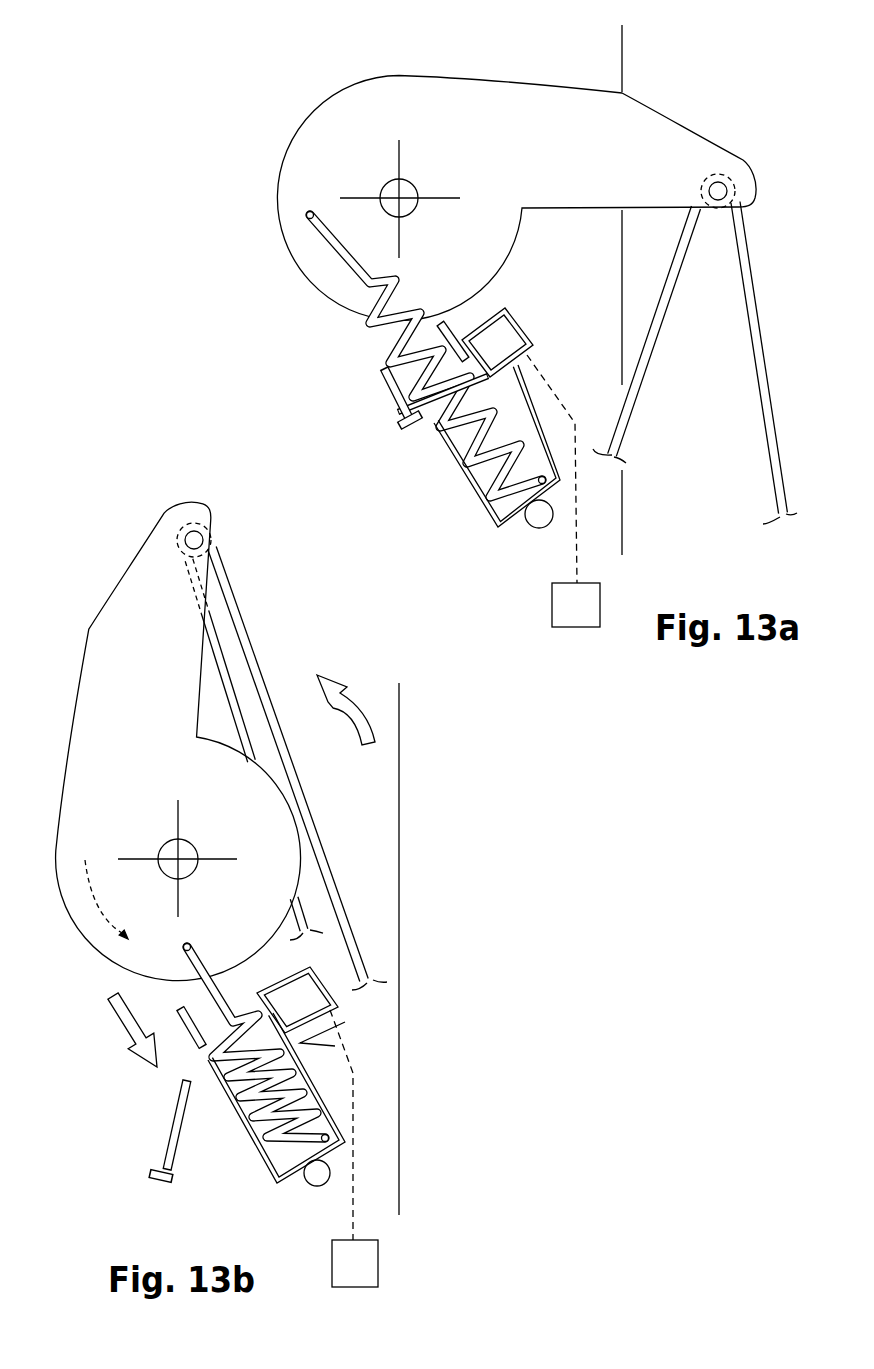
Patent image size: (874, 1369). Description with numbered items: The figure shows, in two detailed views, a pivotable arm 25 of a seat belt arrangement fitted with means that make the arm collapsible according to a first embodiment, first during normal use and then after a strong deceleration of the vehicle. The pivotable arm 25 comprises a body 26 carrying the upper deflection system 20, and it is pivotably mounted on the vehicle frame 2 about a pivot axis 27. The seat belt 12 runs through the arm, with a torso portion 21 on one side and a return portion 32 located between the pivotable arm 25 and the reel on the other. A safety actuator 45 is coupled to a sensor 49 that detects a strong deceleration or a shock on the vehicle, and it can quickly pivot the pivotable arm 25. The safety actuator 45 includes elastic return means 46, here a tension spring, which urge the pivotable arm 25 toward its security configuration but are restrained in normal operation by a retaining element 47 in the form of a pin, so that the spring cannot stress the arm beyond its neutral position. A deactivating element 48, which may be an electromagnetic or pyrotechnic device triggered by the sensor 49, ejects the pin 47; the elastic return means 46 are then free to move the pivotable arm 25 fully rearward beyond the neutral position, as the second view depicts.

In FIG. 13a, the frame 2 is at (597, 56).
In FIG. 13a, the seat belt 12 is at (781, 459).
In FIG. 13b, the seat belt 12 is at (307, 919).
In FIG. 13a, the upper deflection system 20 is at (760, 216).
In FIG. 13b, the upper deflection system 20 is at (222, 521).
In FIG. 13a, the torso portion 21 is at (768, 372).
In FIG. 13b, the torso portion 21 is at (323, 842).
In FIG. 13a, the pivotable arm 25 is at (516, 168).
In FIG. 13b, the pivotable arm 25 is at (169, 741).
In FIG. 13a, the body 26 is at (405, 103).
In FIG. 13b, the body 26 is at (122, 746).
In FIG. 13a, the pivot axis 27 is at (398, 200).
In FIG. 13b, the pivot axis 27 is at (174, 848).
In FIG. 13a, the return portion 32 is at (663, 326).
In FIG. 13b, the return portion 32 is at (303, 900).
In FIG. 13a, the safety actuator 45 is at (453, 494).
In FIG. 13b, the safety actuator 45 is at (178, 1064).
In FIG. 13a, the elastic return means 46 is at (337, 262).
In FIG. 13b, the elastic return means 46 is at (262, 1135).
In FIG. 13a, the retaining element 47 is at (433, 405).
In FIG. 13b, the retaining element 47 is at (174, 1134).
In FIG. 13a, the deactivating element 48 is at (500, 344).
In FIG. 13b, the deactivating element 48 is at (300, 981).
In FIG. 13a, the sensor 49 is at (578, 605).
In FIG. 13b, the sensor 49 is at (365, 1262).